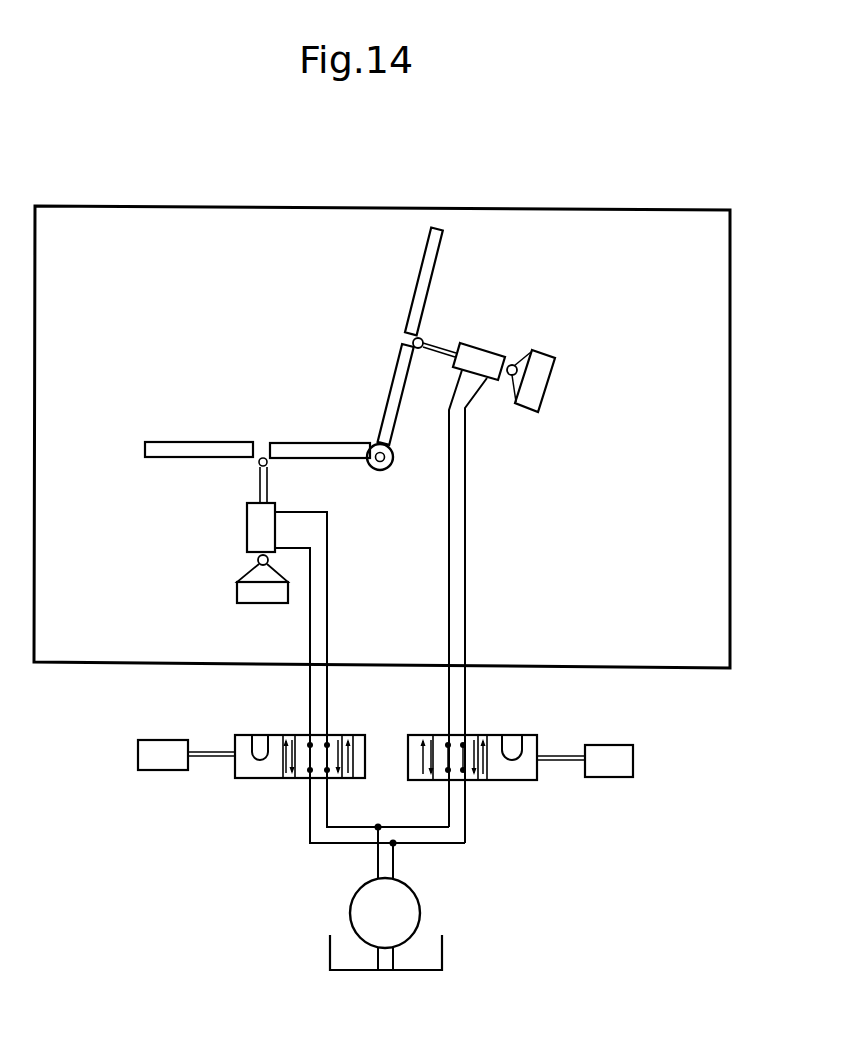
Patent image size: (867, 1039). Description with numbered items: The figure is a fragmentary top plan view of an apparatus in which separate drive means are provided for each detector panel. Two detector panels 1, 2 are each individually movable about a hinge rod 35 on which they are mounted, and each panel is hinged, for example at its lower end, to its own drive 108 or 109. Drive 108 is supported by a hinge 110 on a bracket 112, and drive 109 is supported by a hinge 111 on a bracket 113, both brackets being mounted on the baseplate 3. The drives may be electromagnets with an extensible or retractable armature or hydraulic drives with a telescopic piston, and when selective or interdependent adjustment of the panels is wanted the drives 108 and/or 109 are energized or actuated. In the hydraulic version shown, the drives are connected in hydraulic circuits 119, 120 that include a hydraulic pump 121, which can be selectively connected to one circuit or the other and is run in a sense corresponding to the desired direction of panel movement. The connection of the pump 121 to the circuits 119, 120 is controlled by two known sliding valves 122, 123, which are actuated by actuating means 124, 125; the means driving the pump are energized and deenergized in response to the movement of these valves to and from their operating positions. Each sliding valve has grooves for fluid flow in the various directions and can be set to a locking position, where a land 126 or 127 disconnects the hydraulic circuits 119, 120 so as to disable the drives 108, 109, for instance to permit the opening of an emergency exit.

The detector panel 1 is at (423, 285).
The detector panel 2 is at (190, 452).
The baseplate 3 is at (630, 253).
The hinge rod 35 is at (383, 467).
The drive 108 is at (250, 528).
The drive 109 is at (480, 357).
The hinge 110 is at (258, 562).
The bracket 112 is at (265, 596).
The hinge 111 is at (517, 370).
The bracket 113 is at (532, 392).
The hydraulic circuit 119 is at (327, 698).
The hydraulic circuit 120 is at (465, 700).
The hydraulic pump 121 is at (403, 918).
The sliding valve 122 is at (264, 780).
The sliding valve 123 is at (524, 775).
The actuating means 124 is at (153, 762).
The actuating means 125 is at (605, 768).
The land 126 is at (263, 733).
The land 127 is at (520, 733).